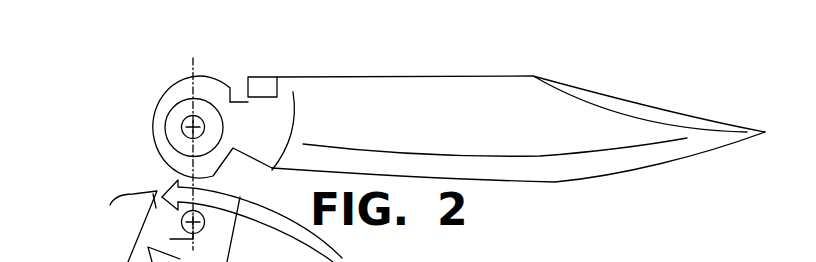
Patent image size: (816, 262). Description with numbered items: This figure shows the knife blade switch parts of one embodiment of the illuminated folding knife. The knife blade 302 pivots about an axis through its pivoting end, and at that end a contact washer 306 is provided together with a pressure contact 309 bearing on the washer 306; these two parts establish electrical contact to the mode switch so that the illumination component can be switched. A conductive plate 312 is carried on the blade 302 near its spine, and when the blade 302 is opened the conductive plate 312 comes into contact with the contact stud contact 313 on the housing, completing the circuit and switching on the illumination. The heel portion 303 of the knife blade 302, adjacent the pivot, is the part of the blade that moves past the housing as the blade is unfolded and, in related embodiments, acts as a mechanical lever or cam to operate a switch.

The knife blade 302 is at (462, 118).
The heel portion 303 is at (148, 148).
The contact washer 306 is at (195, 102).
The conductive plate 312 is at (262, 85).
The contact stud contact 313 is at (160, 190).
The pressure contact 309 is at (172, 235).